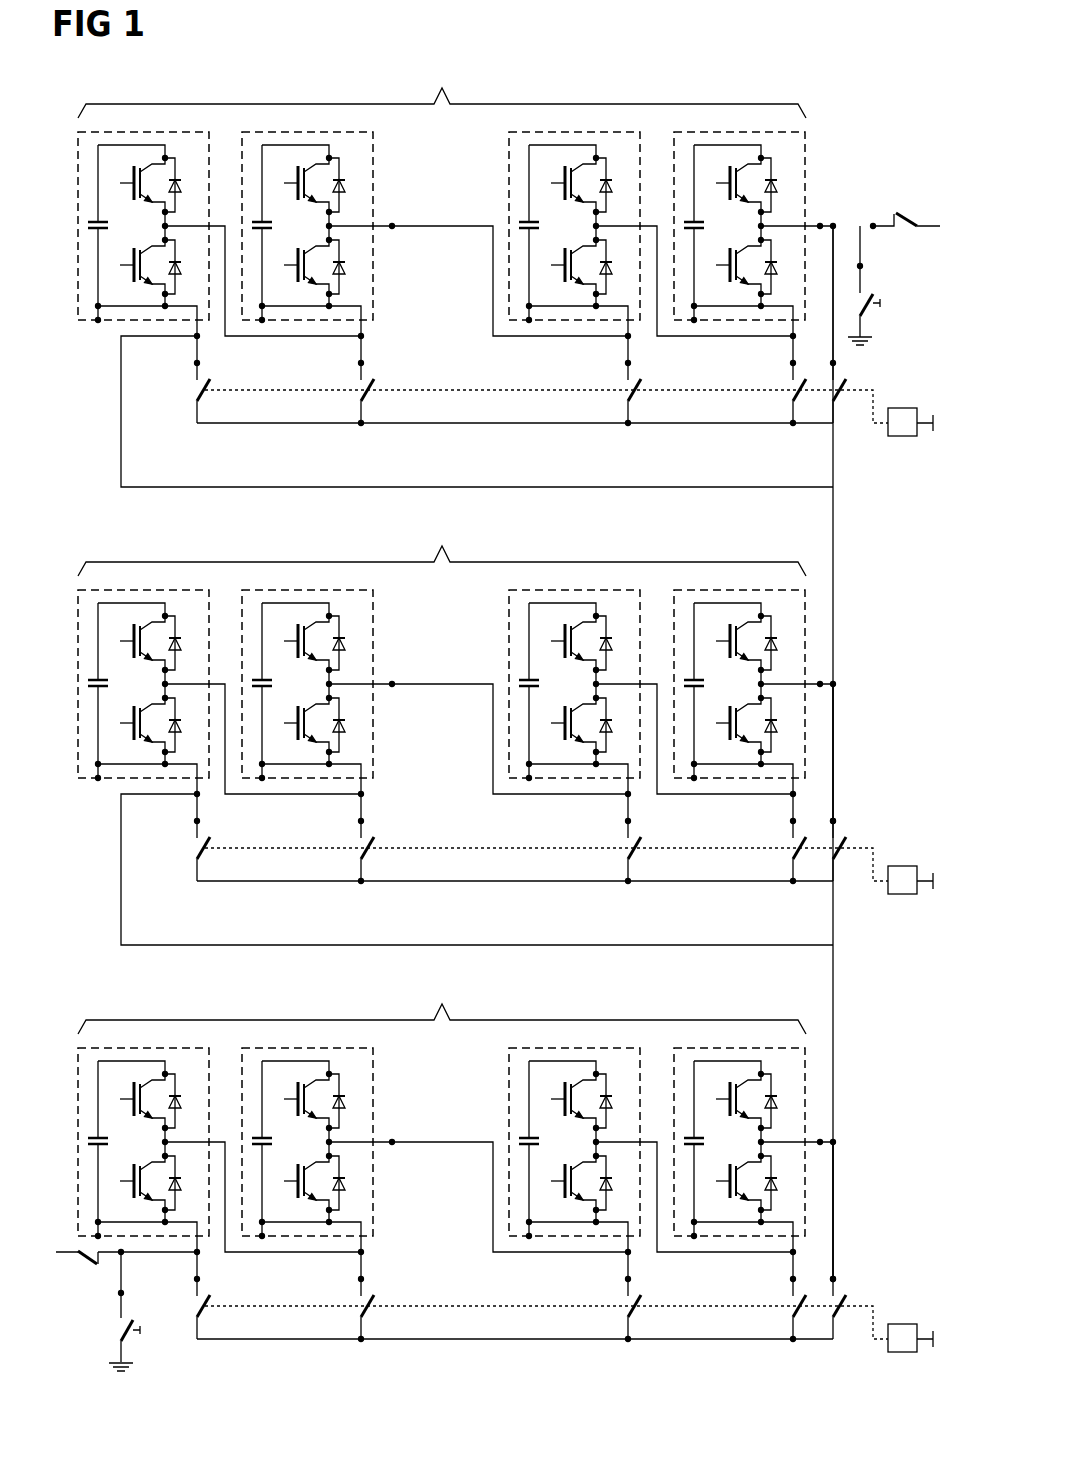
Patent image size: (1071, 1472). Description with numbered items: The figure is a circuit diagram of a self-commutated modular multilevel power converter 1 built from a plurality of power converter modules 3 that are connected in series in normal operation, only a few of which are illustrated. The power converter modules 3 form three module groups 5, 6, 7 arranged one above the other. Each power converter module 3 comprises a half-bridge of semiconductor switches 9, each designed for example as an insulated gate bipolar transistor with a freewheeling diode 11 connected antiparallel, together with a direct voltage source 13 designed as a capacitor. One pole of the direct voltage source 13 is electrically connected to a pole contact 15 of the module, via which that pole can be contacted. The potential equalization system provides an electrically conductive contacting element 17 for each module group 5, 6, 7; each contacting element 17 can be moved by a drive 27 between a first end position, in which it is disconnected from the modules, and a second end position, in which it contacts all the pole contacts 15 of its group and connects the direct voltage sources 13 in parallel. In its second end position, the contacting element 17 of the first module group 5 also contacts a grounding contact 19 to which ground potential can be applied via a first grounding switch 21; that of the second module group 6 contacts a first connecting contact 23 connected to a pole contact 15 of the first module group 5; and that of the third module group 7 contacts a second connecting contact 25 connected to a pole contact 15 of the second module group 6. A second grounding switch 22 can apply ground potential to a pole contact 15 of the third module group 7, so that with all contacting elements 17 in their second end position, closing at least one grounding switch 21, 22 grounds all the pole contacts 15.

The modular multilevel power converter 1 is at (309, 81).
The power converter module 3 is at (136, 131).
The first module group 5 is at (485, 280).
The second module group 6 is at (505, 728).
The third module group 7 is at (492, 1170).
The semiconductor switch 9 is at (129, 178).
The freewheeling diode 11 is at (180, 186).
The direct voltage source 13 is at (94, 232).
The pole contact 15 is at (197, 350).
The contacting element 17 is at (518, 424).
The grounding contact 19 is at (836, 377).
The first grounding switch 21 is at (866, 315).
The second grounding switch 22 is at (96, 1311).
The first connecting contact 23 is at (869, 758).
The second connecting contact 25 is at (869, 1216).
The drive 27 is at (907, 437).